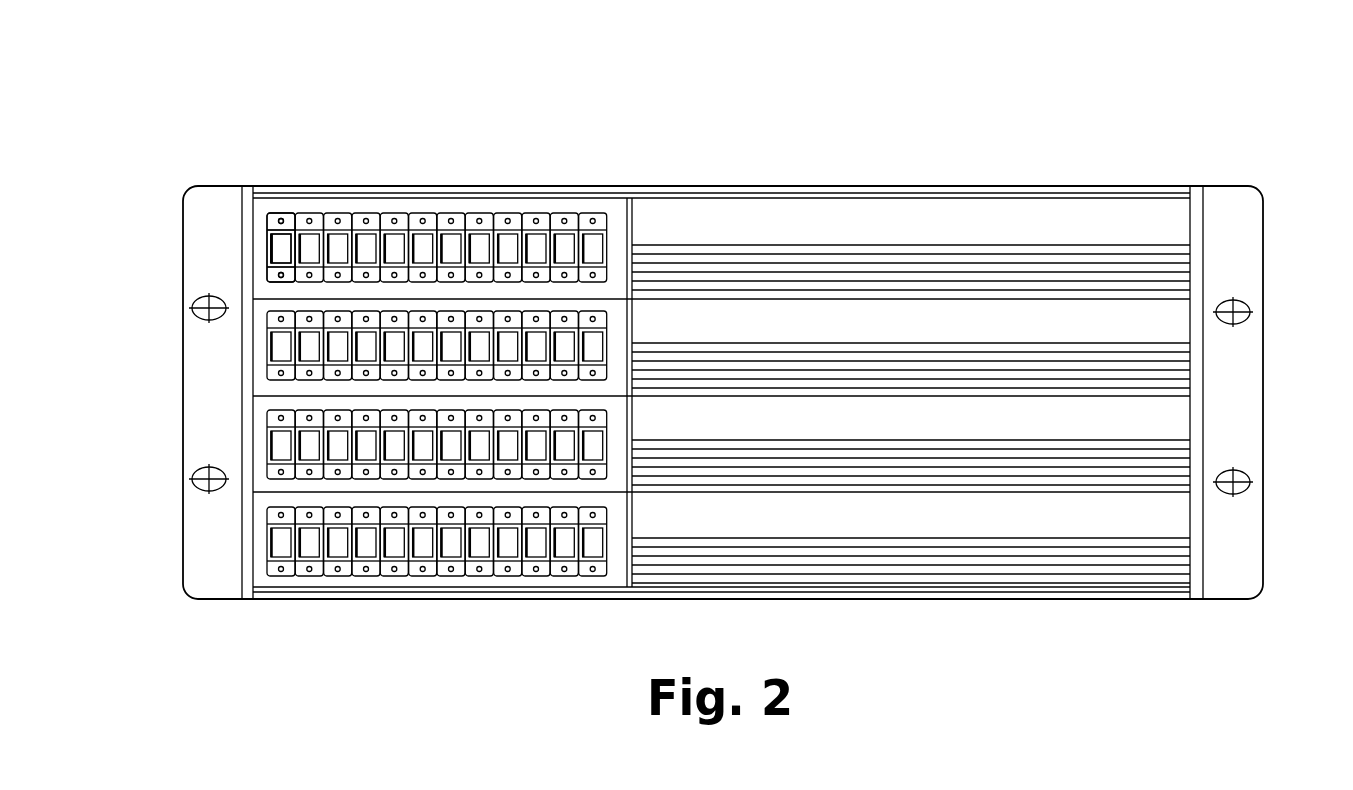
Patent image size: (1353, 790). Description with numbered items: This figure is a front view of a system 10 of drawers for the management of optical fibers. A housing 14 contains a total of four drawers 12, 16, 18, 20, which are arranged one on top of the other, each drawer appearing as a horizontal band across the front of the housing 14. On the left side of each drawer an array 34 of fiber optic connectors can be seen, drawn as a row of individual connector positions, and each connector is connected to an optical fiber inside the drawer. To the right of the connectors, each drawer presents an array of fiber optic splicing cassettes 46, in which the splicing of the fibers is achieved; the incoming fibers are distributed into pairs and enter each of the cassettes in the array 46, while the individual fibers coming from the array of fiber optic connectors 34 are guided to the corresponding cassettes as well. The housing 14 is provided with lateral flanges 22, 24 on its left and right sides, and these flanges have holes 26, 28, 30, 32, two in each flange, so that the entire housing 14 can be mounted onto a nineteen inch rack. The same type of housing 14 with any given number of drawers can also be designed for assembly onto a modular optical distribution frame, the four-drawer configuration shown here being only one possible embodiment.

The system of drawers 10 is at (696, 124).
The drawer 12 is at (1135, 220).
The housing 14 is at (362, 186).
The drawer 16 is at (1165, 327).
The drawer 18 is at (1165, 420).
The drawer 20 is at (1165, 528).
The lateral flange 22 is at (207, 205).
The lateral flange 24 is at (1235, 223).
The hole 26 is at (193, 306).
The hole 28 is at (193, 479).
The hole 30 is at (1246, 307).
The hole 32 is at (1246, 480).
The array of fiber optic connectors 34 is at (490, 205).
The array of fiber optic splicing cassettes 46 is at (989, 243).